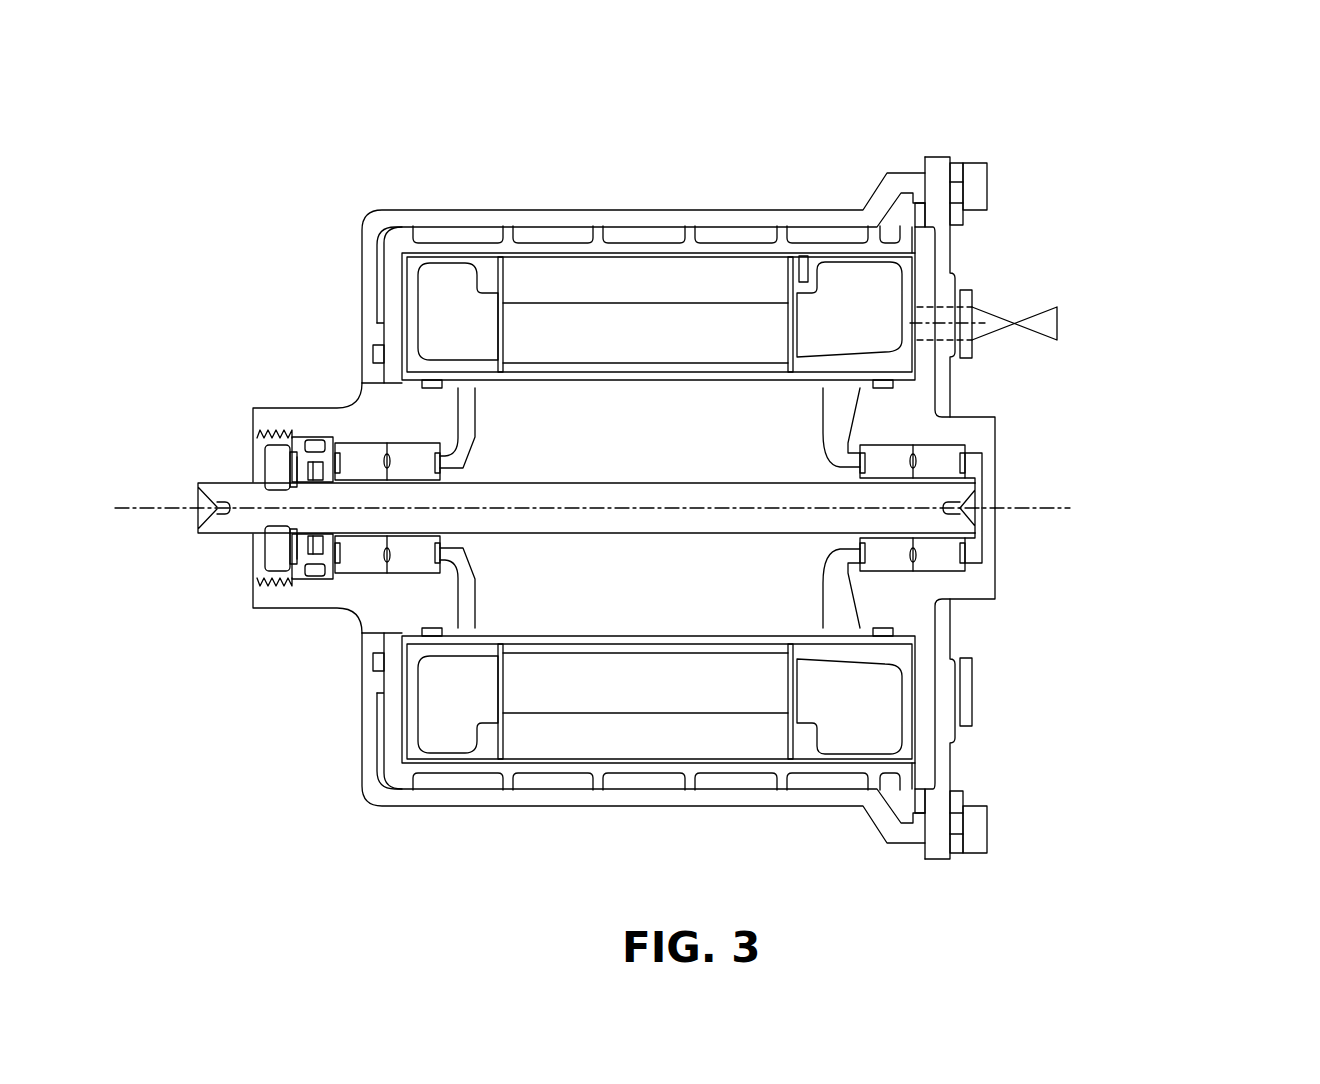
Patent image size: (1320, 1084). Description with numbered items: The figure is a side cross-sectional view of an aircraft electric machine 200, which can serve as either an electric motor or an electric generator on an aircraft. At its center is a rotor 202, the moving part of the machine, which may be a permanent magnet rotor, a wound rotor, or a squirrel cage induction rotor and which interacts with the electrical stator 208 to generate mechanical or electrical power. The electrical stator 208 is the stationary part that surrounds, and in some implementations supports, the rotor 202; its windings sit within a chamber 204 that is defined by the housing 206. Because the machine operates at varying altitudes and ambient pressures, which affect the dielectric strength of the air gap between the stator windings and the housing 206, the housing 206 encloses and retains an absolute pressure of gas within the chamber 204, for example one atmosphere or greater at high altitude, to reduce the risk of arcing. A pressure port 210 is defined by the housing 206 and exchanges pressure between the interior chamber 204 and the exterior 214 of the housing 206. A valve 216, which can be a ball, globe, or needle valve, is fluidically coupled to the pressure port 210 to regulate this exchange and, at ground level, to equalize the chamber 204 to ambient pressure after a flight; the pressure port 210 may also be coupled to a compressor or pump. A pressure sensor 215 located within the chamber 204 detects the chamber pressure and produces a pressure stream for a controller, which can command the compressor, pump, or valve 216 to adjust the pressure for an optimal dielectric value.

The aircraft electric machine 200 is at (1222, 135).
The rotor 202 is at (512, 440).
The chamber 204 is at (403, 340).
The housing 206 is at (362, 258).
The electrical stator 208 is at (705, 312).
The pressure port 210 is at (946, 352).
The exterior 214 is at (1038, 205).
The pressure sensor 215 is at (805, 254).
The valve 216 is at (1058, 330).